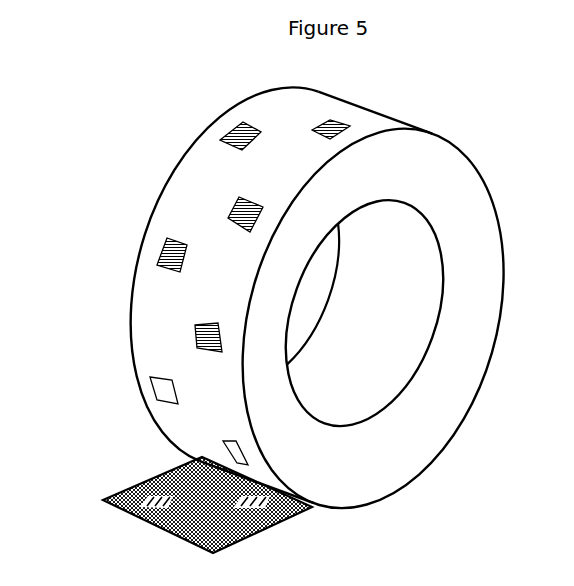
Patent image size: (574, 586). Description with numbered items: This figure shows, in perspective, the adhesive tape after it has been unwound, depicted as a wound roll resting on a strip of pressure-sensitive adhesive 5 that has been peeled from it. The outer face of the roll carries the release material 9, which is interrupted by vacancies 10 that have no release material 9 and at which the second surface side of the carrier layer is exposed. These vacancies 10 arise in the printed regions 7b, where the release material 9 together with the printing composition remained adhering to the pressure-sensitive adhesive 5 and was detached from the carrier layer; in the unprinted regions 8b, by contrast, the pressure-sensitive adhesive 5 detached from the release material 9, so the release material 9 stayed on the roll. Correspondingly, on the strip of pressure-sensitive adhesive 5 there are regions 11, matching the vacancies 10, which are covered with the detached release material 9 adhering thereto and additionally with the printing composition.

The release material 9 is at (373, 111).
The unprinted regions 8b is at (215, 173).
The printed regions 7b is at (235, 213).
The vacancies 10 is at (225, 443).
The pressure-sensitive adhesive 5 is at (185, 465).
The regions 11 is at (235, 501).